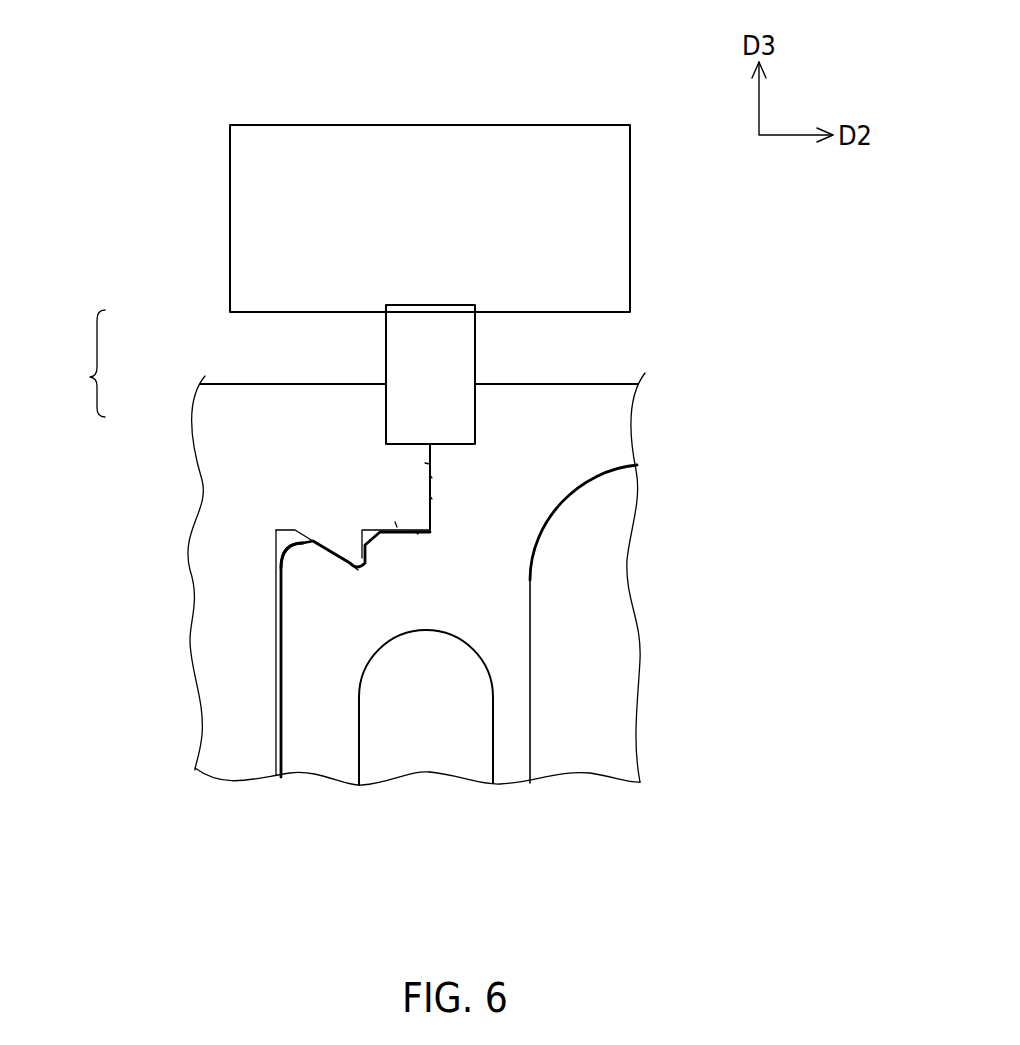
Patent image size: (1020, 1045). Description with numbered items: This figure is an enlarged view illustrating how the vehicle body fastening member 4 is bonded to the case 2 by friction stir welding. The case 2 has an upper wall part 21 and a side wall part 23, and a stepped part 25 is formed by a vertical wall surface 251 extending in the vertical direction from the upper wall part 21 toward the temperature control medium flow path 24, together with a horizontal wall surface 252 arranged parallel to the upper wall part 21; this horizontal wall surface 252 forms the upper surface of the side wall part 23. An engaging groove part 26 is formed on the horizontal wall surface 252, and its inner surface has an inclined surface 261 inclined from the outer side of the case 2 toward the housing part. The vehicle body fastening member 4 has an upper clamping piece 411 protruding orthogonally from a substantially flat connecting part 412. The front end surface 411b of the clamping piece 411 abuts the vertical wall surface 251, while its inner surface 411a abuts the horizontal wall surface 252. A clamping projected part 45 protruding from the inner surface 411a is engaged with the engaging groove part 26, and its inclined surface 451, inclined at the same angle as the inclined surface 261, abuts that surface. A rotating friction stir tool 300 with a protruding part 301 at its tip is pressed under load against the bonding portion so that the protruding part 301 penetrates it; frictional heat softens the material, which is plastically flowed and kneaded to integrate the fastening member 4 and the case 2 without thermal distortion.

The friction stir tool 300 is at (458, 95).
The protruding part 301 is at (477, 358).
The case 2 is at (683, 548).
The upper wall part 21 is at (597, 383).
The side wall part 23 is at (297, 745).
The temperature control medium flow path 24 is at (430, 760).
The stepped part 25 is at (81, 363).
The vertical wall surface 251 is at (430, 464).
The horizontal wall surface 252 is at (397, 527).
The engaging groove part 26 is at (370, 558).
The inclined surface 261 is at (352, 567).
The vehicle body fastening member 4 is at (112, 645).
The clamping piece 411 is at (430, 498).
The inner surface 411a is at (416, 532).
The front end surface 411b is at (430, 477).
The connecting part 412 is at (277, 666).
The clamping projected part 45 is at (338, 542).
The inclined surface 451 is at (292, 539).